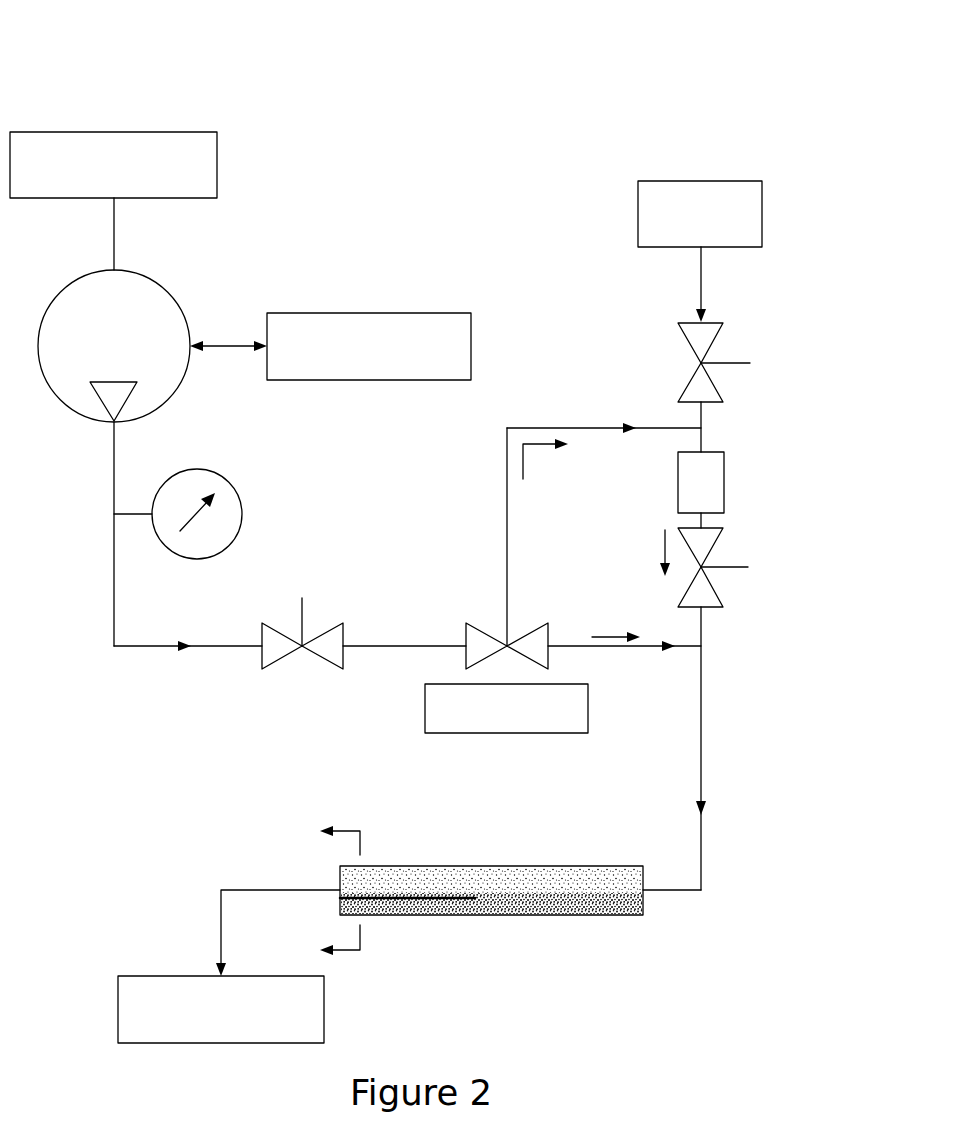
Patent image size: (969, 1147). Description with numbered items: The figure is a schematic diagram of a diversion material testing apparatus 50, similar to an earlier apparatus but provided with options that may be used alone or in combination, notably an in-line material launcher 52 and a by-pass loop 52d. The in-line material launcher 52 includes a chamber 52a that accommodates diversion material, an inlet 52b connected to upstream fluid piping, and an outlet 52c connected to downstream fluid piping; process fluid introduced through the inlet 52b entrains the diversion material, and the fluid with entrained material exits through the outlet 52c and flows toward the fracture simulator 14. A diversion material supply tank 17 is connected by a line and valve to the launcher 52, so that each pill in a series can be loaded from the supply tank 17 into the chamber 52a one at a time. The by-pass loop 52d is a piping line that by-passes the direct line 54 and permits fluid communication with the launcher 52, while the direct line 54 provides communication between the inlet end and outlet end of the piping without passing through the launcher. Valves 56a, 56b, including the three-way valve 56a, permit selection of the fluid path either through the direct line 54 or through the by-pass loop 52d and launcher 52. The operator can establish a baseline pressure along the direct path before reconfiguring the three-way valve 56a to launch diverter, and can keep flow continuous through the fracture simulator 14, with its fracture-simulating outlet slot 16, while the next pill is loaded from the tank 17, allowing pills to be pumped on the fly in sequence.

The test apparatus 50 is at (134, 52).
The diversion material supply tank 17 is at (638, 211).
The in-line material launcher 52 is at (736, 448).
The chamber 52a is at (712, 482).
The inlet 52b is at (704, 451).
The outlet 52c is at (703, 515).
The by-pass loop 52d is at (550, 427).
The direct line 54 is at (631, 648).
The three-way valve 56a is at (509, 644).
The valve 56b is at (703, 610).
The fracture simulator 14 is at (490, 865).
The fracture-simulating outlet slot 16 is at (405, 897).